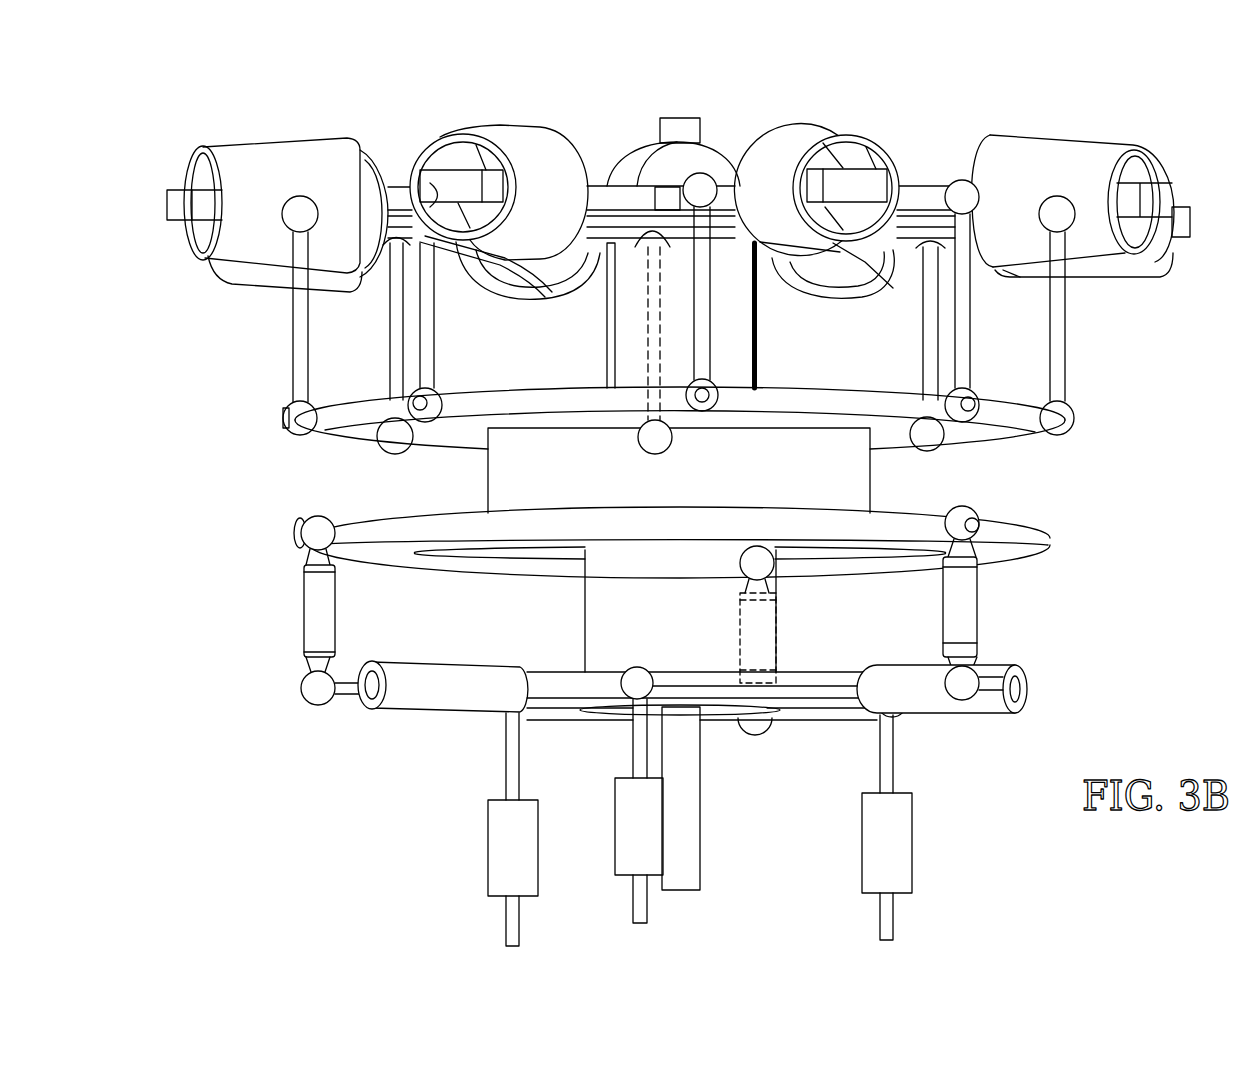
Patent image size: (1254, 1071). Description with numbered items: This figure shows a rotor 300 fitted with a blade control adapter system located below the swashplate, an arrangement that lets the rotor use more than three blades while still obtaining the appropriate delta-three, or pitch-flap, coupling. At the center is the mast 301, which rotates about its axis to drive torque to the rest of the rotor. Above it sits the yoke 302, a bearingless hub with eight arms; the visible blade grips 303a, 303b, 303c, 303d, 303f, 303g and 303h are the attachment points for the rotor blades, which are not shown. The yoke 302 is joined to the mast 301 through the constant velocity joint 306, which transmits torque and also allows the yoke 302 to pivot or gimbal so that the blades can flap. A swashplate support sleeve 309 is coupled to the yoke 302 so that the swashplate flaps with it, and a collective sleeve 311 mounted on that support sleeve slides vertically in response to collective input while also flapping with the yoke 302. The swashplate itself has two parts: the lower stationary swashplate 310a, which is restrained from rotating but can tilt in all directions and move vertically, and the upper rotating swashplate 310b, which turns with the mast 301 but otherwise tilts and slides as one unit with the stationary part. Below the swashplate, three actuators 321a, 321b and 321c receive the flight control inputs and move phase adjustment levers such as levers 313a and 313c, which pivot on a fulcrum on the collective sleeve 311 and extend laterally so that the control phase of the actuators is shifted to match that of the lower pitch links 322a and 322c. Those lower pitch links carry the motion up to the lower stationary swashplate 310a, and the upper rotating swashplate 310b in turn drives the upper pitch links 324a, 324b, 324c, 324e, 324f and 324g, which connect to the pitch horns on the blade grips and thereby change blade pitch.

The rotor 300 is at (651, 487).
The mast 301 is at (700, 835).
The yoke 302 is at (638, 162).
The blade grip 303a is at (1065, 136).
The blade grip 303b is at (1117, 283).
The blade grip 303c is at (250, 290).
The blade grip 303d is at (492, 300).
The blade grip 303f is at (270, 140).
The blade grip 303g is at (492, 130).
The blade grip 303h is at (835, 128).
The constant velocity joint 306 is at (710, 160).
The swashplate support sleeve 309 is at (607, 332).
The lower stationary swashplate 310a is at (1043, 540).
The upper rotating swashplate 310b is at (990, 446).
The collective sleeve 311 is at (585, 630).
The phase adjustment lever 313a is at (800, 670).
The phase adjustment lever 313c is at (405, 713).
The actuator 321a is at (615, 792).
The actuator 321b is at (912, 846).
The actuator 321c is at (488, 850).
The lower pitch link 322a is at (985, 603).
The lower pitch link 322c is at (300, 607).
The upper pitch link 324a is at (968, 380).
The upper pitch link 324b is at (1068, 382).
The upper pitch link 324c is at (924, 360).
The upper pitch link 324e is at (385, 380).
The upper pitch link 324f is at (293, 376).
The upper pitch link 324g is at (437, 354).